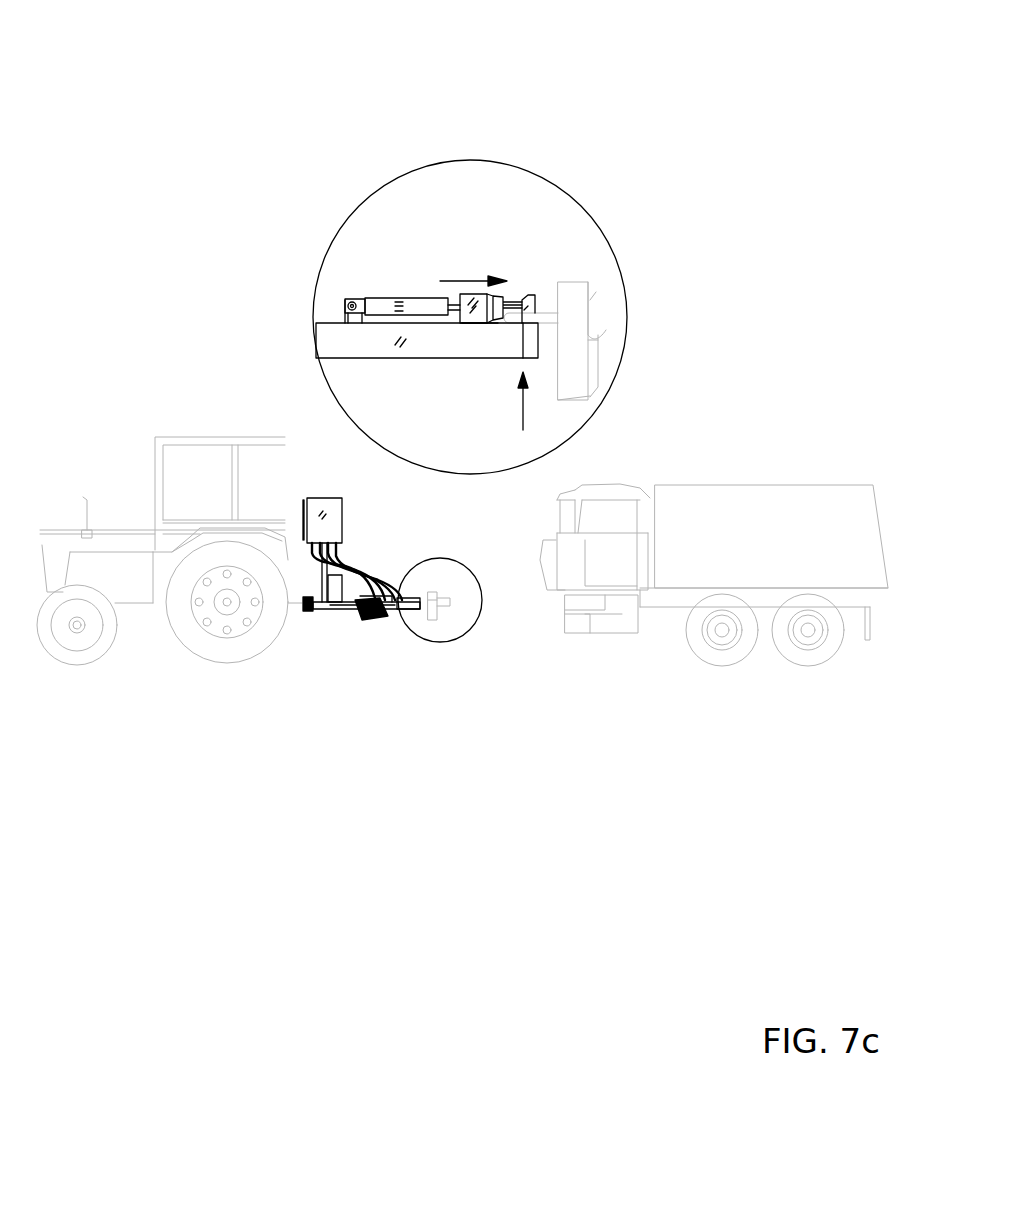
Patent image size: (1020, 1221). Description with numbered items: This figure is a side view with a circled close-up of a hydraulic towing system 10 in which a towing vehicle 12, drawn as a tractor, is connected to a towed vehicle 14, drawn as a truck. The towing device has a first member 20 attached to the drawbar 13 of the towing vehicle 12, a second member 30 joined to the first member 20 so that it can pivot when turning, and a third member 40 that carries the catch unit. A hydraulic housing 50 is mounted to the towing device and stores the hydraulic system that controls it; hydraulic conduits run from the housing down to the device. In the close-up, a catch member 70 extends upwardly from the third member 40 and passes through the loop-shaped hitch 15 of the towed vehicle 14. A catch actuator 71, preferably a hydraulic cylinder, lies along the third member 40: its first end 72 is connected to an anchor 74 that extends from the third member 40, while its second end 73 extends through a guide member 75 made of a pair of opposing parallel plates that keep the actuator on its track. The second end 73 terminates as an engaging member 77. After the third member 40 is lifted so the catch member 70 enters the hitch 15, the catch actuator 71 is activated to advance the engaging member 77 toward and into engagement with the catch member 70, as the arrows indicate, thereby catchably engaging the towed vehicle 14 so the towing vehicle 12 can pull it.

The hydraulic towing system 10 is at (395, 775).
The towing vehicle 12 is at (218, 437).
The drawbar 13 is at (292, 612).
The towed vehicle 14 is at (573, 283).
The hitch 15 is at (547, 303).
The first member 20 is at (318, 612).
The second member 30 is at (348, 610).
The third member 40 is at (374, 360).
The hydraulic housing 50 is at (322, 498).
The catch member 70 is at (535, 298).
The catch actuator 71 is at (407, 297).
The first end 72 is at (348, 300).
The second end 73 is at (497, 322).
The anchor 74 is at (340, 316).
The guide member 75 is at (480, 320).
The engaging member 77 is at (522, 296).